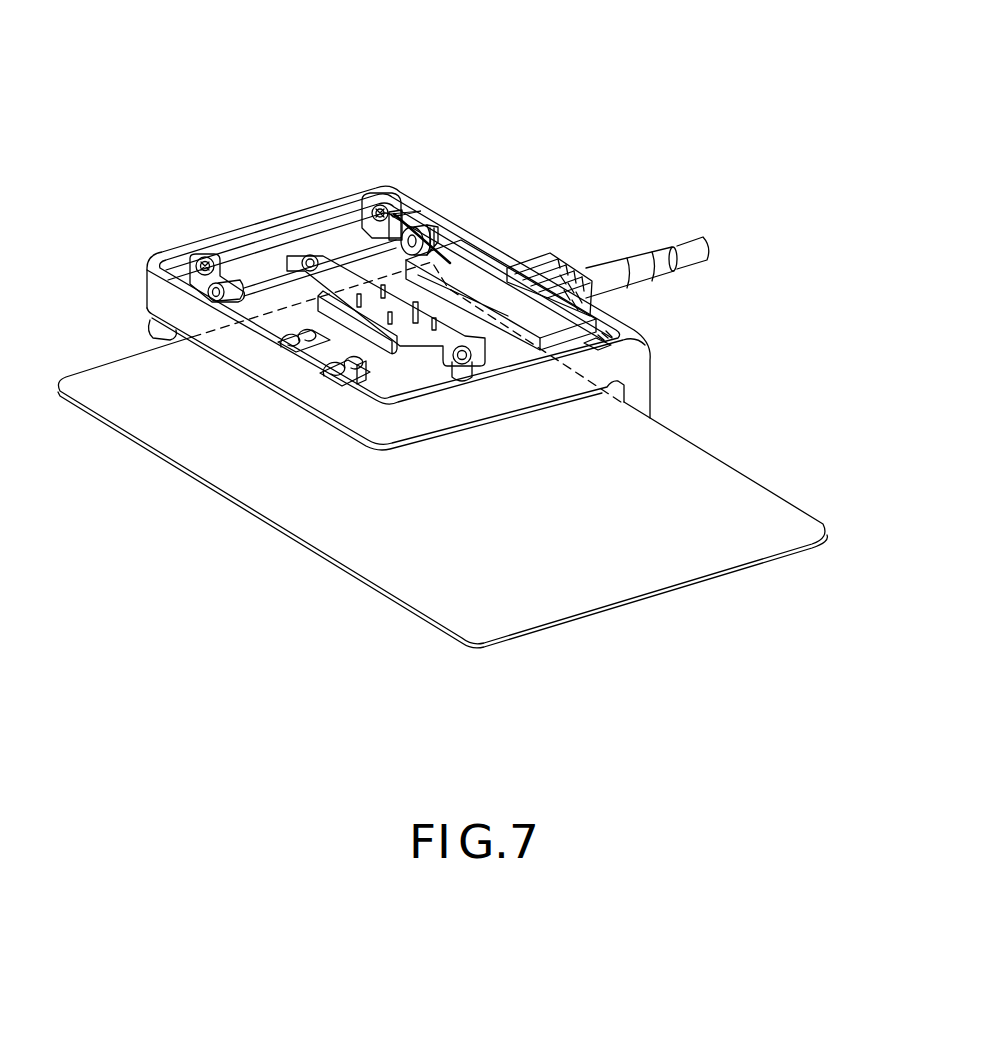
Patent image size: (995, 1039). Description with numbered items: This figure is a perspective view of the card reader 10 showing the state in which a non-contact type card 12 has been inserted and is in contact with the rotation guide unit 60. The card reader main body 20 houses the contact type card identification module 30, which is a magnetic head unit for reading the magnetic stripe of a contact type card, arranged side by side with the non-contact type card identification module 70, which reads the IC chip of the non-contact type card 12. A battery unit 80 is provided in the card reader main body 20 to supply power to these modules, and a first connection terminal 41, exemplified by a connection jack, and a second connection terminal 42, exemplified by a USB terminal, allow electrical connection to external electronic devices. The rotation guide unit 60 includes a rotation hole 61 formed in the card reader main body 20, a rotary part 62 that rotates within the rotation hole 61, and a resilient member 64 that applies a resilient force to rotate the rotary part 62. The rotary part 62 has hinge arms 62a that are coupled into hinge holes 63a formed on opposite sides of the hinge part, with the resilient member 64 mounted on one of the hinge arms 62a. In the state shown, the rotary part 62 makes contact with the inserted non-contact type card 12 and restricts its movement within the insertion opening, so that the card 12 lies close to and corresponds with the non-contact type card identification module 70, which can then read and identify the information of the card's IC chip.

The card reader 10 is at (593, 64).
The non-contact type card 12 is at (435, 600).
The card reader main body 20 is at (403, 387).
The contact type card identification module 30 is at (357, 327).
The first connection terminal 41 is at (613, 338).
The second connection terminal 42 is at (690, 258).
The rotation guide unit 60 is at (472, 62).
The rotation hole 61 is at (450, 240).
The rotary part 62 is at (240, 312).
The hinge arm 62a is at (266, 285).
The hinge hole 63a is at (205, 256).
The resilient member 64 is at (452, 235).
The non-contact type card identification module 70 is at (307, 350).
The battery unit 80 is at (480, 263).